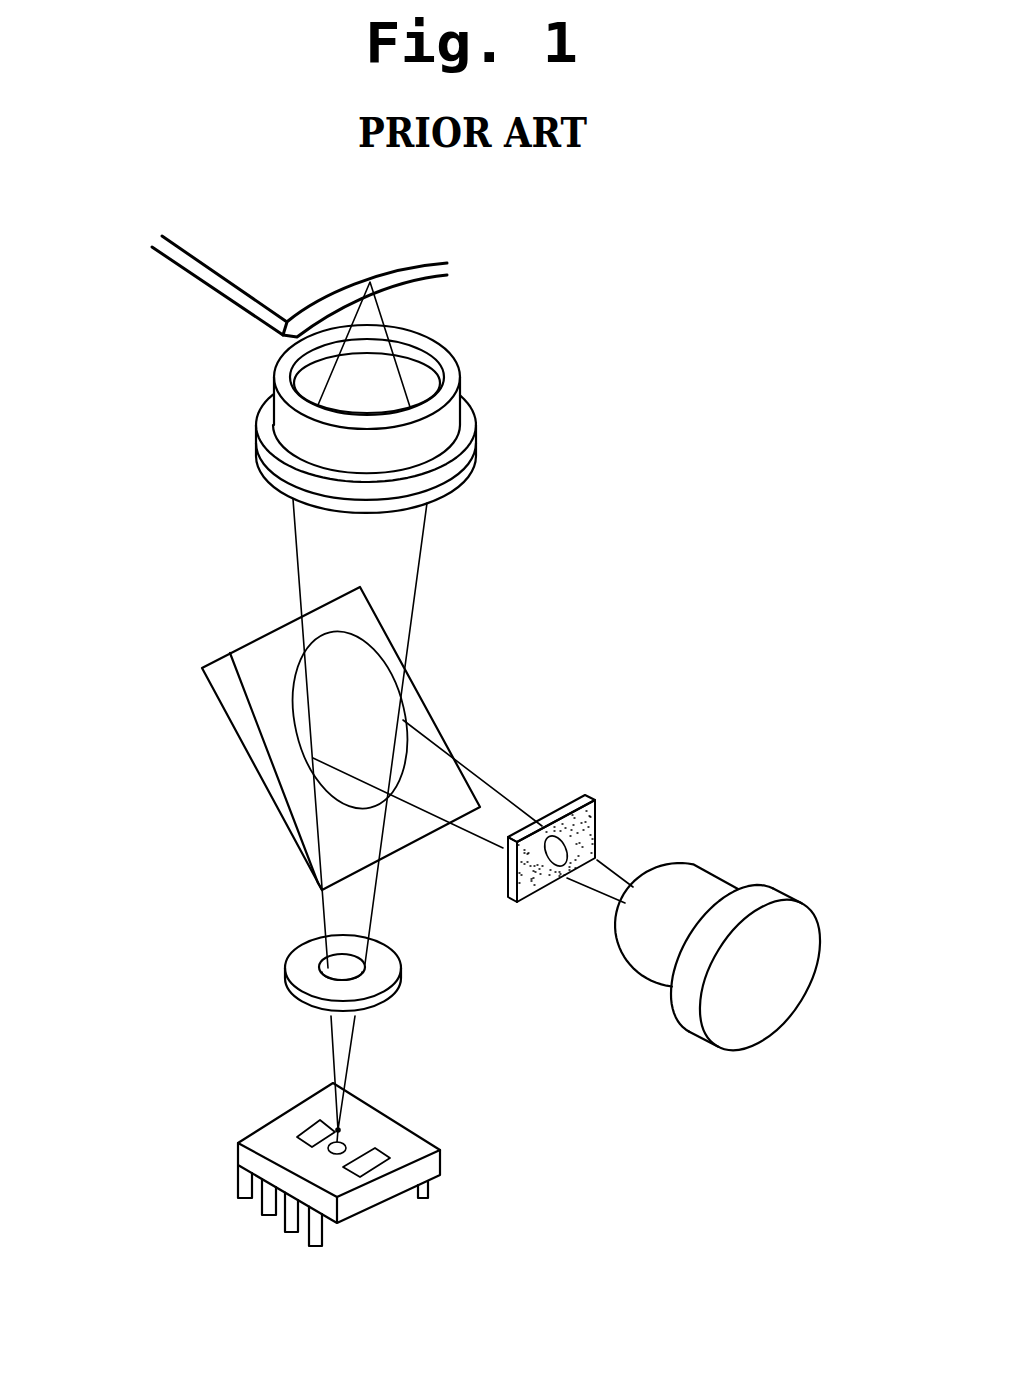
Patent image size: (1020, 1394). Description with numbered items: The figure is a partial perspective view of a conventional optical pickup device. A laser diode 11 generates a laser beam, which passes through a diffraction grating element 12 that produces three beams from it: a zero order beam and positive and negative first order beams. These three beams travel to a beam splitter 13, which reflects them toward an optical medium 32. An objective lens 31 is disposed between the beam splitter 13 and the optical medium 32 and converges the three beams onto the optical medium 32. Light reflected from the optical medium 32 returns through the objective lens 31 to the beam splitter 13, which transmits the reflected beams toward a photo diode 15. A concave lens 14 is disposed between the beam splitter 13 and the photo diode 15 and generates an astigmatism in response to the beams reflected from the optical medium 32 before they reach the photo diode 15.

The laser diode 11 is at (682, 897).
The diffraction grating element 12 is at (565, 803).
The beam splitter 13 is at (432, 768).
The concave lens 14 is at (307, 982).
The photo diode 15 is at (303, 1167).
The objective lens 31 is at (467, 435).
The optical medium 32 is at (410, 266).